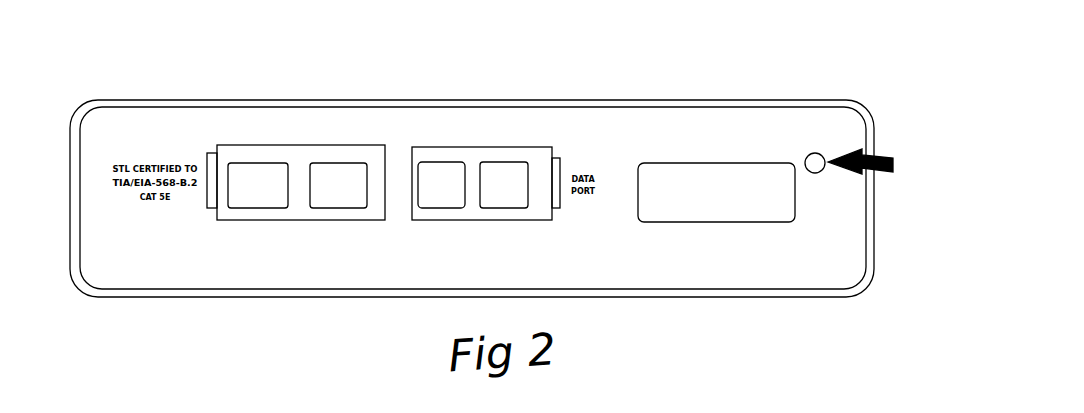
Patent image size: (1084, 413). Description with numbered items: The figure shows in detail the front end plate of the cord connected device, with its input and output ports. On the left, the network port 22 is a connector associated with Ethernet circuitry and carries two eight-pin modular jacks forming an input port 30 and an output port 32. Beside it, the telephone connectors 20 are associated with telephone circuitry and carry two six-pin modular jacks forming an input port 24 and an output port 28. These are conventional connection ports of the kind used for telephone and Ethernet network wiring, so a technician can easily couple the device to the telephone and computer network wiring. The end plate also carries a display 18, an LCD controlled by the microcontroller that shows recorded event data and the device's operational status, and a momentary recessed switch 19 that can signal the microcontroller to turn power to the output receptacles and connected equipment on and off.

The display 18 is at (772, 217).
The momentary recessed switch 19 is at (821, 156).
The telephone connectors 20 is at (508, 162).
The network port 22 is at (362, 147).
The input port 24 is at (430, 207).
The output port 28 is at (527, 205).
The input port 30 is at (233, 207).
The output port 32 is at (318, 160).